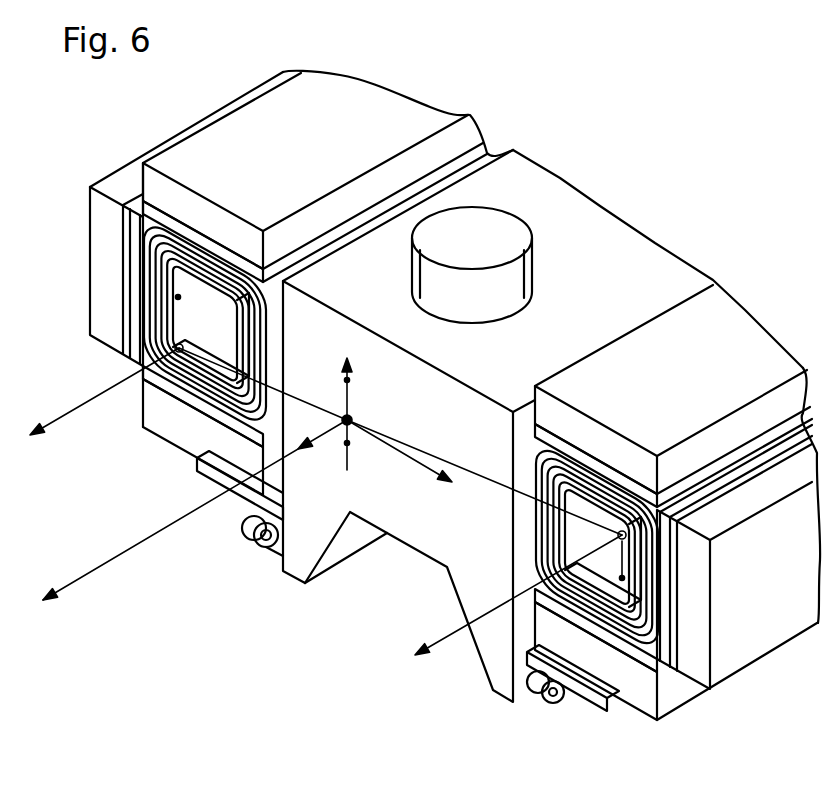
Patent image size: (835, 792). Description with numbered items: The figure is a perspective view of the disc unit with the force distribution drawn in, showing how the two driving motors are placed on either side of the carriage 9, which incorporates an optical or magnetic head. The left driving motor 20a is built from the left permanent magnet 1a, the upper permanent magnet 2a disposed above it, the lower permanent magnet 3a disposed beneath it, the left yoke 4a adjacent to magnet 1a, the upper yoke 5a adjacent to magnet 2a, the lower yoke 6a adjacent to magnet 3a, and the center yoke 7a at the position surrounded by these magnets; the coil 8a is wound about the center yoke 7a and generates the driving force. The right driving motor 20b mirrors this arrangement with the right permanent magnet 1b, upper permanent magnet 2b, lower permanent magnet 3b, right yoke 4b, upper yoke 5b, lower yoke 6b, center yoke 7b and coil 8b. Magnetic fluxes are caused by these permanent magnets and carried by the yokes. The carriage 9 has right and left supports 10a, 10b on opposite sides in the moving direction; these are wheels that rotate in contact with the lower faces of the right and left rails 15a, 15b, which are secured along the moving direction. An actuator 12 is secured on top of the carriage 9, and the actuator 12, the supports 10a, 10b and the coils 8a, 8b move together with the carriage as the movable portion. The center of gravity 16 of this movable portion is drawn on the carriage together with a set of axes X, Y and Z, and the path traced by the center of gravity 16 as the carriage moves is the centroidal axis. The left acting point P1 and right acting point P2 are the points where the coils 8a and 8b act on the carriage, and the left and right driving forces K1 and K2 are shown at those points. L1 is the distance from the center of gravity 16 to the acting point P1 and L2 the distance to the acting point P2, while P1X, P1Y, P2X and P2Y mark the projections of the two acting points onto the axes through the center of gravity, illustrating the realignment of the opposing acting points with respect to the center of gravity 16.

The left permanent magnet 1a is at (123, 257).
The right permanent magnet 1b is at (700, 688).
The upper permanent magnet 2a is at (170, 218).
The upper permanent magnet 2b is at (582, 457).
The lower permanent magnet 3a is at (170, 400).
The lower permanent magnet 3b is at (635, 668).
The left yoke 4a is at (93, 238).
The right yoke 4b is at (673, 673).
The upper yoke 5a is at (190, 200).
The upper yoke 5b is at (623, 450).
The lower yoke 6a is at (180, 433).
The lower yoke 6b is at (642, 707).
The center yoke 7a is at (180, 297).
The center yoke 7b is at (612, 598).
The coil 8a is at (140, 207).
The coil 8b is at (698, 660).
The carriage 9 is at (593, 203).
The right support 10a is at (252, 541).
The left support 10b is at (537, 700).
The actuator 12 is at (490, 225).
The right rail 15a is at (213, 490).
The left rail 15b is at (493, 690).
The center of gravity 16 is at (357, 427).
The left driving motor 20a is at (238, 168).
The right driving motor 20b is at (688, 381).
The left acting point P1 is at (181, 349).
The right acting point P2 is at (630, 540).
The thrust point X component P1X is at (178, 297).
The thrust point X component P2X is at (622, 580).
The thrust point Y component P1Y is at (349, 447).
The thrust point Y component P2Y is at (352, 380).
The left driving force K1 is at (104, 406).
The right driving force K2 is at (518, 612).
The distance L1 is at (273, 387).
The distance L2 is at (493, 483).
The X axis X is at (399, 462).
The Y axis Y is at (354, 410).
The Z axis Z is at (195, 510).